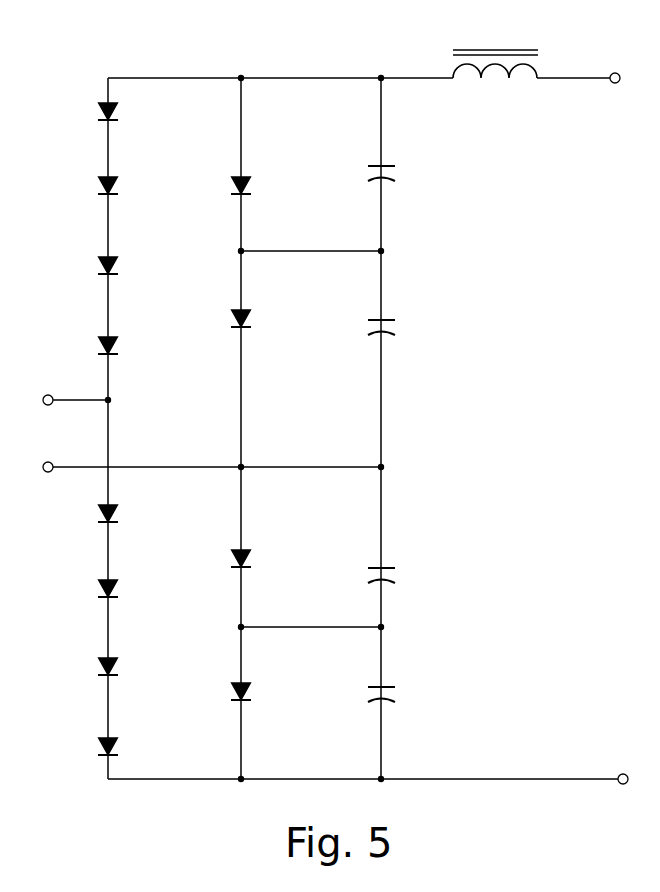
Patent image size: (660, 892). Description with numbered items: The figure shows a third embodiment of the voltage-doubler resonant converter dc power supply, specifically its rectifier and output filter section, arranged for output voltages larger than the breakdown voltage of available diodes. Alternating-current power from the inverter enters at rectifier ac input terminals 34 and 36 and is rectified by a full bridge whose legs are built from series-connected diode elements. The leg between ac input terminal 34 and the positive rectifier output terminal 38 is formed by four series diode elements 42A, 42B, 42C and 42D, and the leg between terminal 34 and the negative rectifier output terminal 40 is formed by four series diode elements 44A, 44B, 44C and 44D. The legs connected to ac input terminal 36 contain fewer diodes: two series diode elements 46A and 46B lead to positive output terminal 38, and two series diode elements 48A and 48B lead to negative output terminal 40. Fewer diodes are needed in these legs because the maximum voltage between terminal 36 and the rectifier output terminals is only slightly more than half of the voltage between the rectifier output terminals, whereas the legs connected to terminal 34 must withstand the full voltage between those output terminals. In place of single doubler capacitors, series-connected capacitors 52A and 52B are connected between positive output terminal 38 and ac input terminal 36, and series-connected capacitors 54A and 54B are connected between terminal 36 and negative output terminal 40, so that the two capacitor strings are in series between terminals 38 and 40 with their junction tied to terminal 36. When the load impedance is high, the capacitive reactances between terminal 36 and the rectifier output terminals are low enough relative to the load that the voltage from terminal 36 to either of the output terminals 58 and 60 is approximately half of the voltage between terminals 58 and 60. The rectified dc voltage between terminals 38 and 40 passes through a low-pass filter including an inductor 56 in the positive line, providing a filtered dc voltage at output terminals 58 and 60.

The ac input terminal 34 is at (75, 400).
The ac input terminal 36 is at (75, 467).
The positive rectifier output terminal 38 is at (241, 78).
The negative rectifier output terminal 40 is at (133, 780).
The series-connected diode element 42A is at (108, 92).
The series-connected diode element 42B is at (108, 166).
The series-connected diode element 42C is at (108, 246).
The series-connected diode element 42D is at (108, 326).
The series-connected diode element 44A is at (108, 494).
The series-connected diode element 44B is at (108, 569).
The series-connected diode element 44C is at (108, 647).
The series-connected diode element 44D is at (108, 727).
The series-connected diode element 46A is at (241, 166).
The series-connected diode element 46B is at (241, 299).
The series-connected diode element 48A is at (241, 539).
The series-connected diode element 48B is at (241, 672).
The series-connected capacitor 52A is at (381, 162).
The series-connected capacitor 52B is at (381, 316).
The series-connected capacitor 54A is at (381, 564).
The series-connected capacitor 54B is at (381, 683).
The inductor 56 is at (465, 48).
The output terminal 58 is at (583, 76).
The output terminal 60 is at (592, 778).